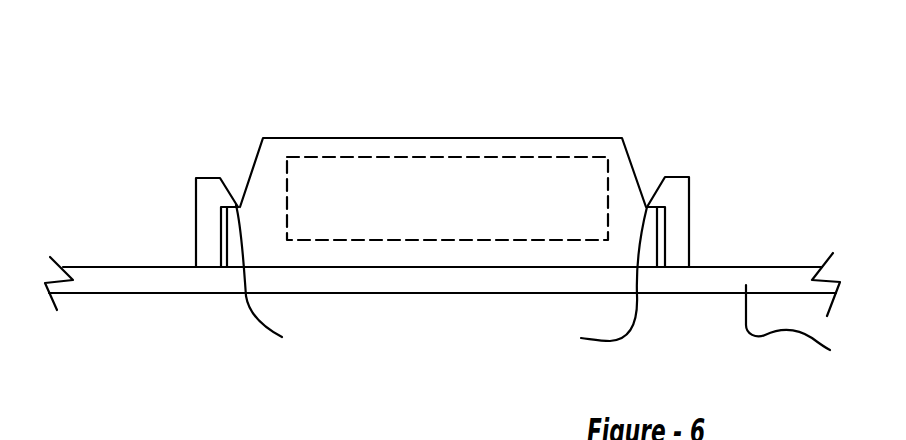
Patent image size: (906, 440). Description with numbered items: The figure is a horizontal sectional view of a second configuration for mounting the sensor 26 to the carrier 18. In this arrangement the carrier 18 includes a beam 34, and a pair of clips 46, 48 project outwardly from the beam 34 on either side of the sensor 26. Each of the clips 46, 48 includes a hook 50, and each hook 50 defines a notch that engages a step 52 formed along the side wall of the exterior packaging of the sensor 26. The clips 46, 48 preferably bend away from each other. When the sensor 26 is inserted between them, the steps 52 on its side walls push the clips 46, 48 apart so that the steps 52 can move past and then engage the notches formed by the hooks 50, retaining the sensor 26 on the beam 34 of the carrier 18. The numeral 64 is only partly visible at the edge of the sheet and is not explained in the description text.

The carrier 18 is at (128, 267).
The sensor 26 is at (443, 138).
The beam 34 is at (799, 331).
The clip 46 is at (203, 192).
The clip 48 is at (690, 220).
The hook 50 is at (236, 205).
The step 52 is at (441, 278).
The mounting feature 64 is at (409, 432).